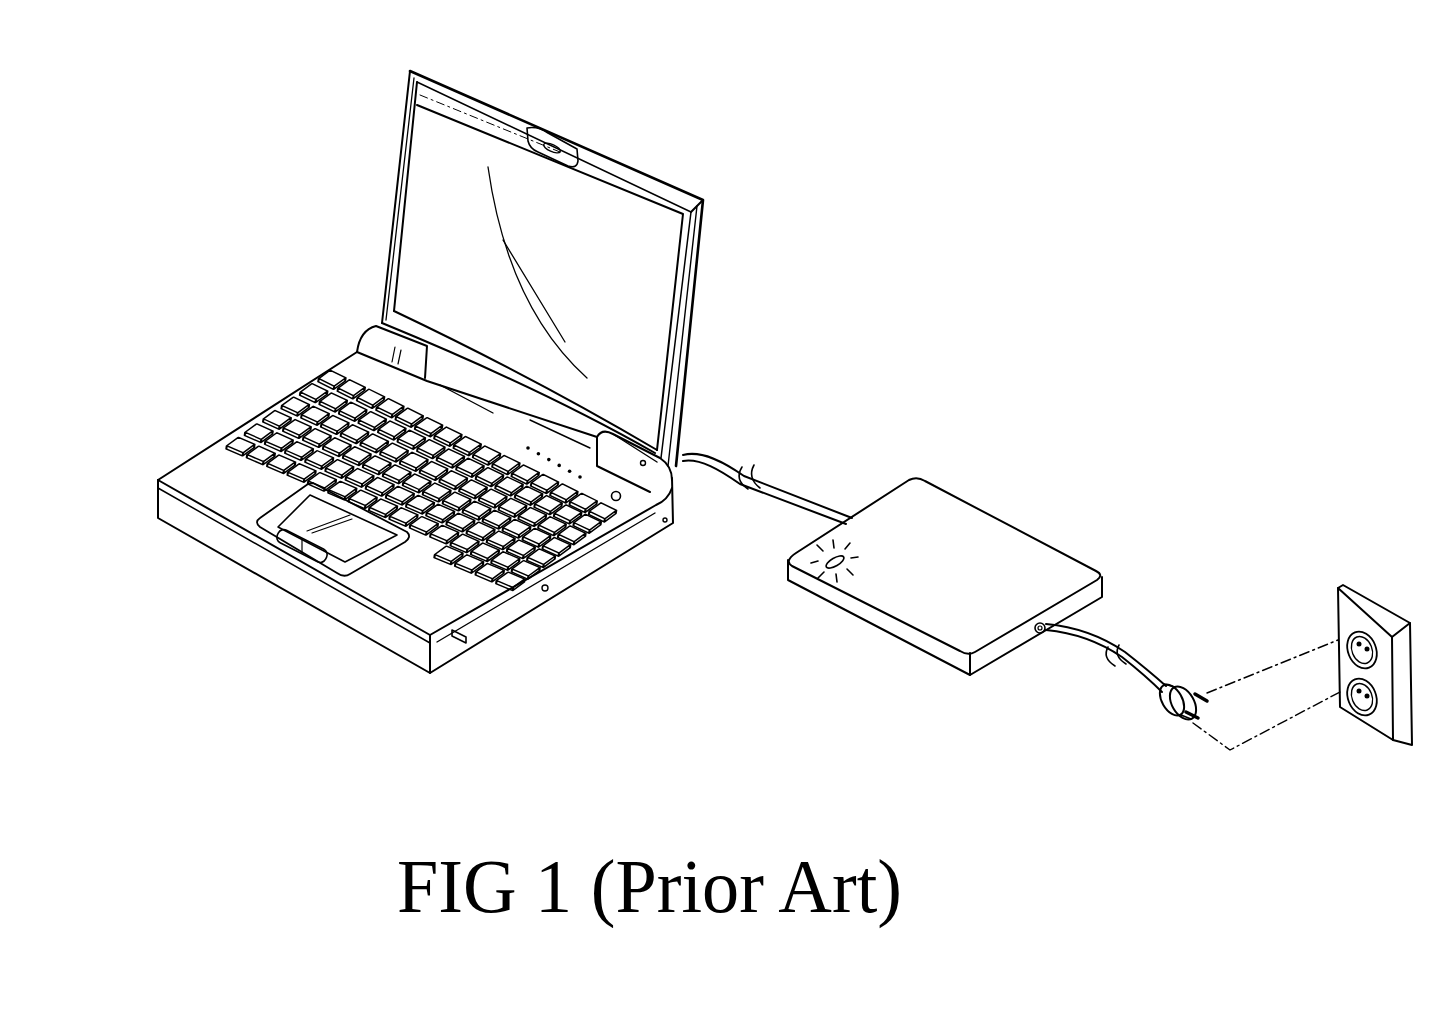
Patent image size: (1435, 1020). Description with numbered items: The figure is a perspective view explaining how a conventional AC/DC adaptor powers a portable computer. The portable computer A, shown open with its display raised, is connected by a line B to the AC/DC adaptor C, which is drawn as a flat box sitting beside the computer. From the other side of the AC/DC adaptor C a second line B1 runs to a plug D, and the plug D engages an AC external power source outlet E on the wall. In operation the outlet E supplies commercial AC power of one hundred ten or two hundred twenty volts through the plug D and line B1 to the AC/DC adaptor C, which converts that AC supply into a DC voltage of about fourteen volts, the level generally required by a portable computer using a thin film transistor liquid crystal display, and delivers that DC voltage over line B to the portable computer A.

The portable computer A is at (628, 168).
The line B is at (777, 484).
The AC/DC adaptor C is at (995, 523).
The line B1 is at (1100, 634).
The plug D is at (1185, 683).
The AC external power source outlet E is at (1367, 607).